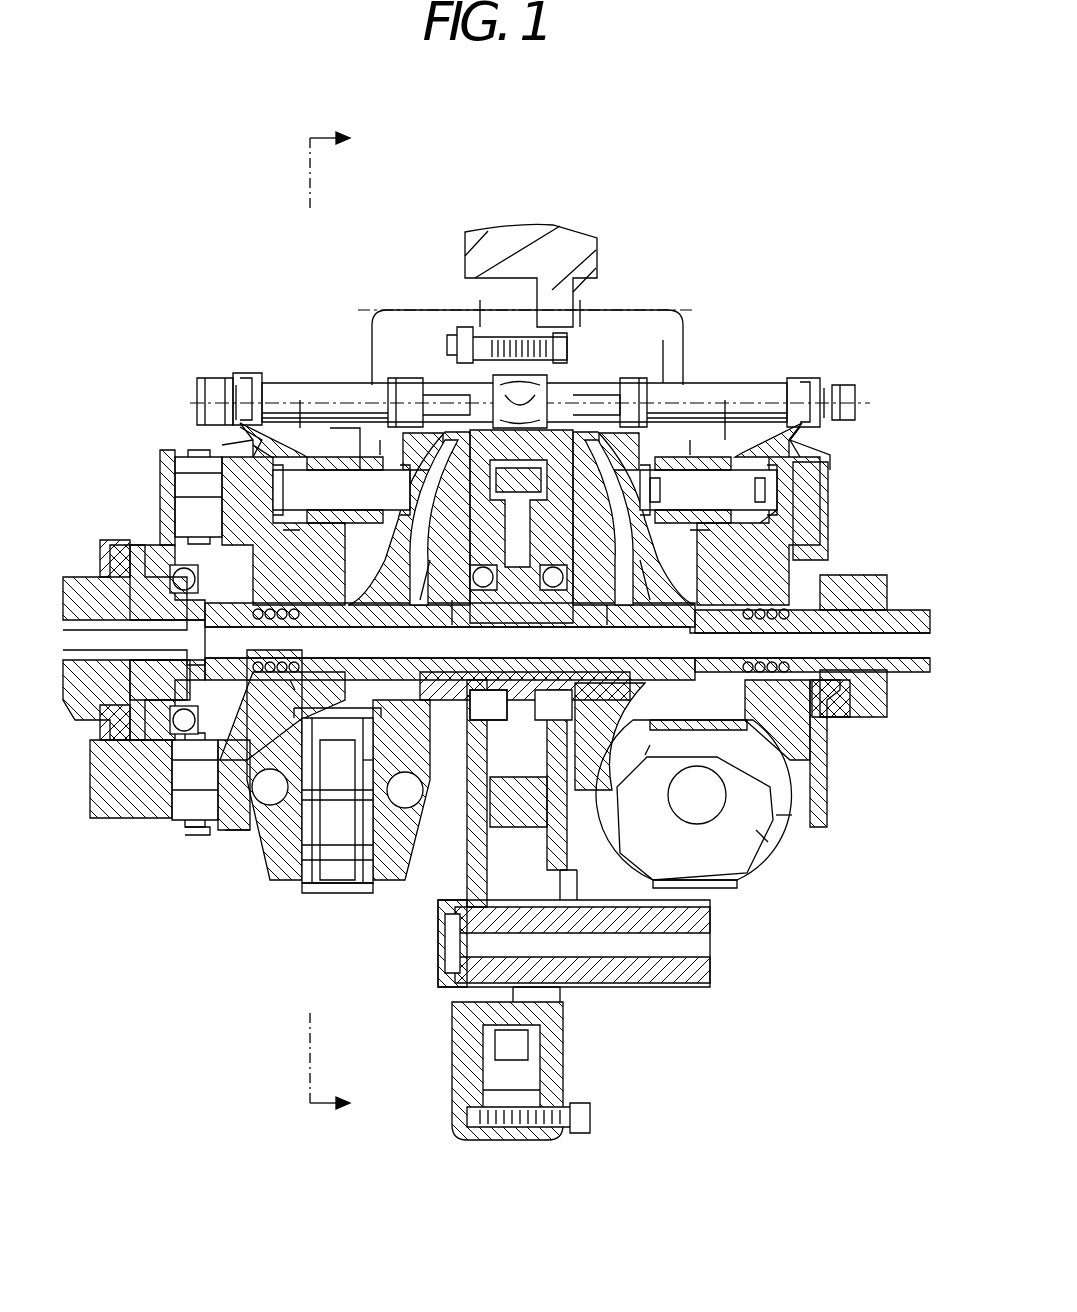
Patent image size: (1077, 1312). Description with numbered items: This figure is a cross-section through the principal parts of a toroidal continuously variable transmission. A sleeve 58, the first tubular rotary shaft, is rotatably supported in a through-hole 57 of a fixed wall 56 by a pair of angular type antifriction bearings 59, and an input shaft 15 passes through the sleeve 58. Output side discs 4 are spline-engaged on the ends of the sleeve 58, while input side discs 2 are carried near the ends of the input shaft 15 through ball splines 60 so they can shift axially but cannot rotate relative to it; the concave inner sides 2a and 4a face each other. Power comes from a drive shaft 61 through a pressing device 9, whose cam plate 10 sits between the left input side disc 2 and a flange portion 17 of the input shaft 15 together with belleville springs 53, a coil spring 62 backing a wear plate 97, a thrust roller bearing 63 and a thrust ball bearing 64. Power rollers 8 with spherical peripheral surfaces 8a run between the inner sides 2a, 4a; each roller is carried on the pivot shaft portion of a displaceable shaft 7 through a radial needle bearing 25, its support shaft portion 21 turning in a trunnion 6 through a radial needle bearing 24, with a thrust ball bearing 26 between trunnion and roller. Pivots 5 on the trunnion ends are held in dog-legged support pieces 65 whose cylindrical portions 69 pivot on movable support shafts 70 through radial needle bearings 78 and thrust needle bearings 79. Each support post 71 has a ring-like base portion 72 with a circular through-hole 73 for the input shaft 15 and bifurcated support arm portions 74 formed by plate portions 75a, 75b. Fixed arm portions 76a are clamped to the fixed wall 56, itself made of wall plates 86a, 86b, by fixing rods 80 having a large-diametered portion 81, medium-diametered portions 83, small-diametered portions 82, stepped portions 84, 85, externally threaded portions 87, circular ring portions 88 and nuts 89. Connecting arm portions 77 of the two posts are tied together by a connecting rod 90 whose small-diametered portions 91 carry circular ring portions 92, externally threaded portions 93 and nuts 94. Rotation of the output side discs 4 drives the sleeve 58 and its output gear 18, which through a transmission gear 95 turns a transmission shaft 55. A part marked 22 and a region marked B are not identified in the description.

The input side disc 2 is at (830, 500).
The inner side of input side disc 2a is at (185, 490).
The output side disc 4 is at (437, 372).
The inner side of output side disc 4a is at (455, 605).
The pivot 5 is at (727, 815).
The trunnion 6 is at (398, 822).
The displaceable shaft 7 is at (337, 780).
The power roller 8 is at (842, 850).
The peripheral surface of power roller 8a is at (293, 662).
The pressing device 9 is at (178, 808).
The cam plate 10 is at (200, 490).
The input shaft 15 is at (247, 762).
The flange portion 17 is at (180, 725).
The output gear 18 is at (550, 925).
The support shaft portion 21 is at (345, 875).
The pin 22 is at (378, 868).
The radial needle bearing 24 is at (368, 870).
The radial needle bearing 25 is at (303, 835).
The thrust ball bearing 26 is at (282, 782).
The belleville spring 53 is at (160, 565).
The transmission shaft 55 is at (673, 970).
The fixed wall 56 is at (663, 383).
The through-hole 57 is at (567, 808).
The sleeve 58 is at (470, 700).
The antifriction bearing 59 is at (543, 592).
The ball spline 60 is at (172, 552).
The drive shaft 61 is at (85, 687).
The coil spring 62 is at (195, 830).
The thrust roller bearing 63 is at (232, 765).
The thrust ball bearing 64 is at (178, 800).
The support piece 65 is at (297, 880).
The cylindrical portion 69 is at (357, 460).
The pivotally movable support shaft 70 is at (305, 392).
The support post 71 is at (824, 452).
The base portion 72 is at (853, 572).
The circular through-hole 73 is at (342, 664).
The support arm portion 74 is at (772, 526).
The plate portion 75a is at (353, 455).
The plate portion 75b is at (822, 481).
The fixed arm portion 76a is at (440, 392).
The connecting arm portion 77 is at (806, 440).
The radial needle bearing 78 is at (700, 468).
The thrust needle bearing 79 is at (290, 455).
The fixing rod 80 is at (512, 337).
The intermediate large-diametered portion 81 is at (485, 350).
The small-diametered portion 82 is at (590, 383).
The medium-diametered portion 83 is at (572, 360).
The stepped portion 84 is at (514, 416).
The stepped portion 85 is at (572, 377).
The wall plate 86a is at (495, 363).
The wall plate 86b is at (533, 357).
The externally threaded portion 87 is at (376, 318).
The circular ring portion 88 is at (625, 390).
The nut 89 is at (330, 455).
The connecting rod 90 is at (748, 393).
The small-diametered portion 91 is at (797, 392).
The circular ring portion 92 is at (810, 383).
The externally threaded portion 93 is at (824, 392).
The nut 94 is at (842, 398).
The transmission gear 95 is at (533, 1077).
The wear plate 97 is at (120, 560).
The section B is at (617, 310).